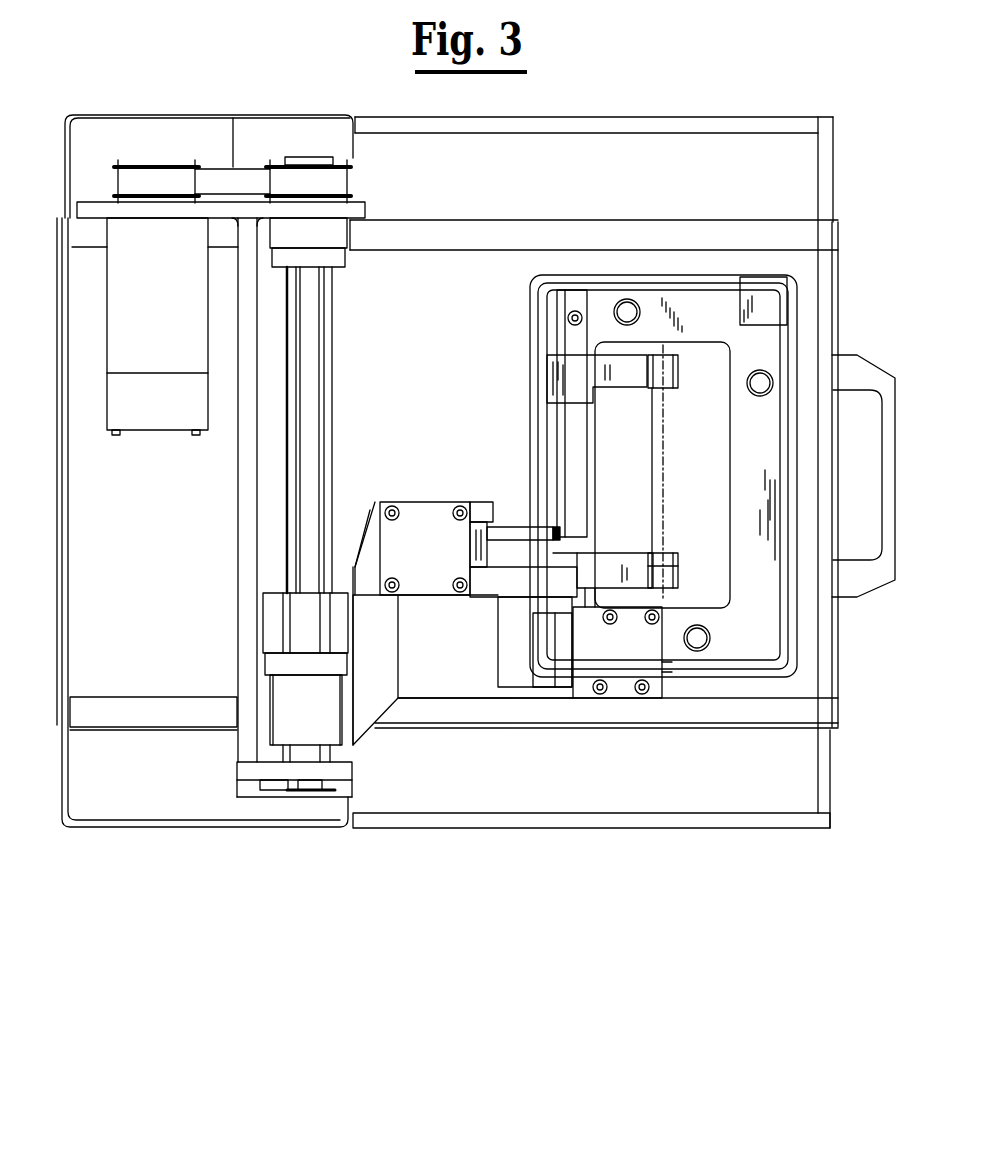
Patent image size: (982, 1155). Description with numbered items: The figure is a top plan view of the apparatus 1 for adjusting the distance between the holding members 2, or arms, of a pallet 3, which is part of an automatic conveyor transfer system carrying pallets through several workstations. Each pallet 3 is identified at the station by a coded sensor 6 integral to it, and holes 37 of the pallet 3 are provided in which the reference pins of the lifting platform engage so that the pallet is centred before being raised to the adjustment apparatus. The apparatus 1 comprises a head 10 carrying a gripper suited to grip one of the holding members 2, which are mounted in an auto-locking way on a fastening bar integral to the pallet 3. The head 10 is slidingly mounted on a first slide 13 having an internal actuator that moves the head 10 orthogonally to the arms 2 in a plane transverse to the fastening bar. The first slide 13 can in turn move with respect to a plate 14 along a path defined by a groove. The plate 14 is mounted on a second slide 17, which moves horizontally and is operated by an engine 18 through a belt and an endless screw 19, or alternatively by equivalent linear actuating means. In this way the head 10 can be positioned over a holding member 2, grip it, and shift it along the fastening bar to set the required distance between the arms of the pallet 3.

The apparatus 1 is at (190, 845).
The holding members 2 is at (637, 573).
The pallet 3 is at (663, 290).
The coded sensor 6 is at (762, 287).
The head 10 is at (643, 652).
The first slide 13 is at (563, 647).
The plate 14 is at (503, 580).
The second slide 17 is at (370, 680).
The engine 18 is at (166, 317).
The endless screw 19 is at (298, 420).
The holes 37 is at (760, 396).